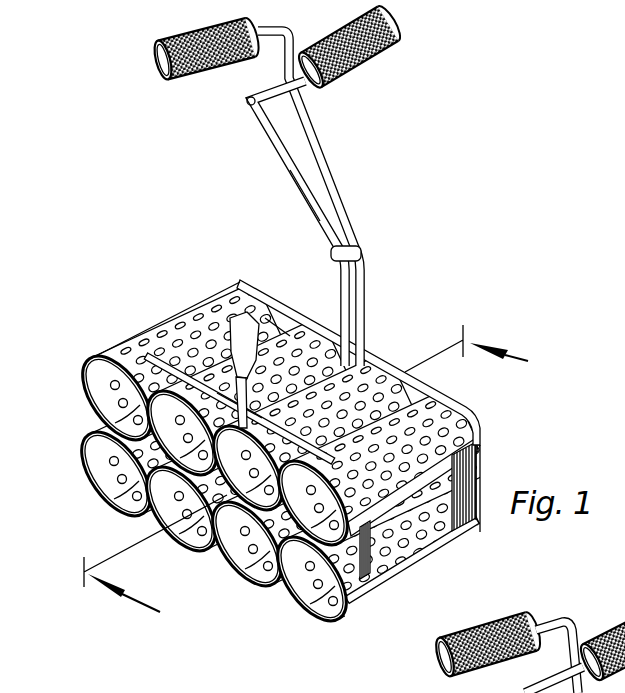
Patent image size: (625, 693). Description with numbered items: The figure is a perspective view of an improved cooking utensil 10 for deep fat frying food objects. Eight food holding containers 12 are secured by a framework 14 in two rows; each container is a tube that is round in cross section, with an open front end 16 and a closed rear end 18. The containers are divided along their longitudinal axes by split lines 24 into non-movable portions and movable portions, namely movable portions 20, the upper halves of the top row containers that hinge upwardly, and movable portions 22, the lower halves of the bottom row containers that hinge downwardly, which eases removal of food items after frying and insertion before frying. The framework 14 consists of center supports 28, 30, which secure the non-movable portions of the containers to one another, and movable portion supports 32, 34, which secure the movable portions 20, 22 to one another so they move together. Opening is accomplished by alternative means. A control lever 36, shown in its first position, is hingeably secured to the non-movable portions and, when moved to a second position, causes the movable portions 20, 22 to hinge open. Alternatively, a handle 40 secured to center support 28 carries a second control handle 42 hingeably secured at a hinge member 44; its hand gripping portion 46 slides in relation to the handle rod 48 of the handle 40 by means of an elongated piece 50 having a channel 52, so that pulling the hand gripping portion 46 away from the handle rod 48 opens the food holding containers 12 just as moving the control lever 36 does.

The cooking utensil 10 is at (456, 266).
The food holding containers 12 is at (88, 414).
The framework 14 is at (466, 427).
The open front ends 16 is at (116, 512).
The closed rear ends 18 is at (484, 443).
The movable portions 20 is at (89, 367).
The movable portions 22 is at (98, 401).
The split lines 24 is at (417, 560).
The center support 28 is at (370, 588).
The center support 30 is at (478, 487).
The movable portion support 32 is at (165, 338).
The movable portion support 34 is at (281, 325).
The control lever 36 is at (233, 293).
The handle 40 is at (330, 133).
The second control handle 42 is at (284, 172).
The hinge member 44 is at (356, 252).
The hand gripping portion 46 is at (370, 63).
The handle rod 48 is at (300, 191).
The elongated piece 50 is at (266, 108).
The channel 52 is at (266, 89).